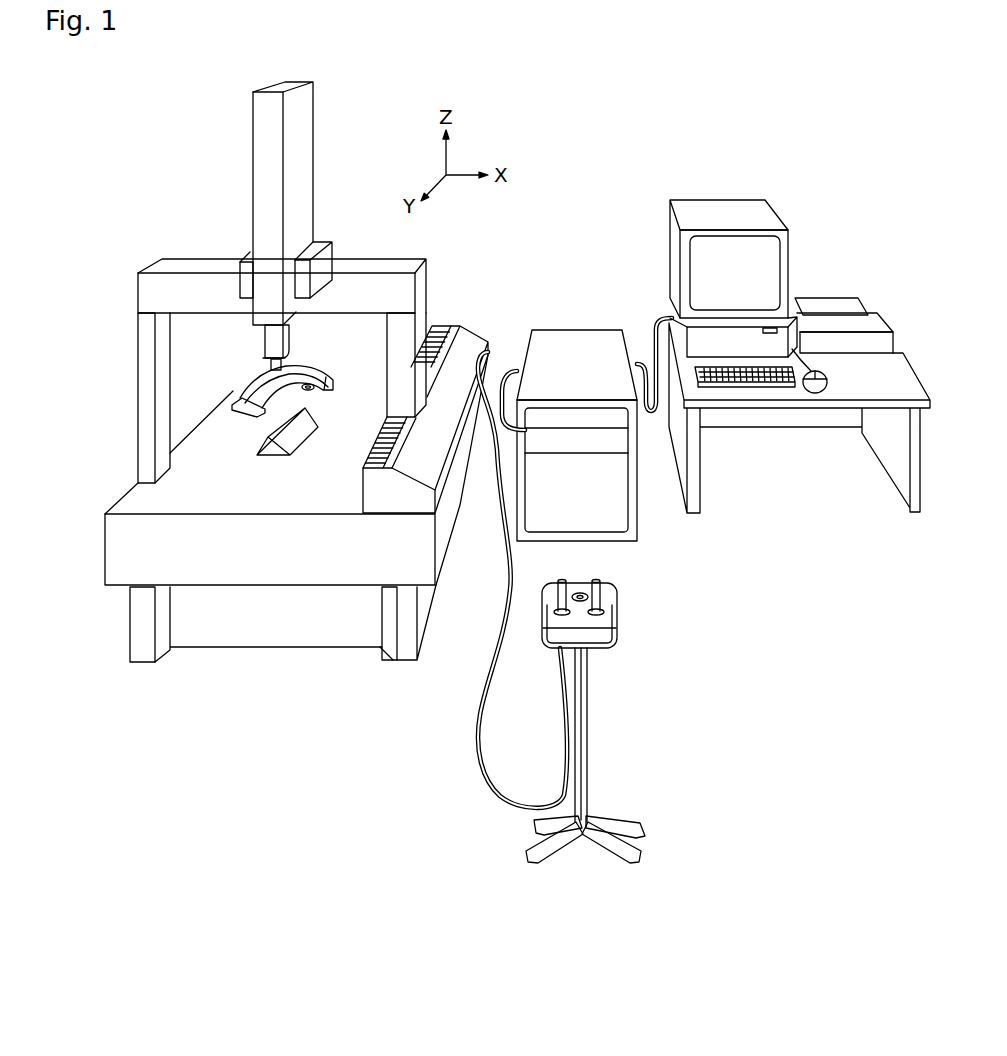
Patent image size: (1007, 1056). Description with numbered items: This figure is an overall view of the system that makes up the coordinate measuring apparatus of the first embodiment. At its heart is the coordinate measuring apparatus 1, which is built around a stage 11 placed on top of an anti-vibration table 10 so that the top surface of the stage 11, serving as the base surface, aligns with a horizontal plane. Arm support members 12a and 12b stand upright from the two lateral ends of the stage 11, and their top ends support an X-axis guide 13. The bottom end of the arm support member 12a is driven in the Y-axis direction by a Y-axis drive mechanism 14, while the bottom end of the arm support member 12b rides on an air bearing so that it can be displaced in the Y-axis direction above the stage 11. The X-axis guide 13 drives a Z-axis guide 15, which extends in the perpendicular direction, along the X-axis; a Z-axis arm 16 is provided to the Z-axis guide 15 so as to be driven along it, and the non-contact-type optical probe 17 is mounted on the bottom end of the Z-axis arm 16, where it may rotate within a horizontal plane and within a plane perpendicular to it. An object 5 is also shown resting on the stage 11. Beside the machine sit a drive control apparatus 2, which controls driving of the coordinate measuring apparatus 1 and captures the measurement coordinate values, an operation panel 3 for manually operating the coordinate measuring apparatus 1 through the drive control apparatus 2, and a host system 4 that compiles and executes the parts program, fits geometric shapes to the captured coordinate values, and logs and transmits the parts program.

The coordinate measuring apparatus 1 is at (289, 363).
The drive control apparatus 2 is at (576, 337).
The operation panel 3 is at (650, 629).
The host system 4 is at (820, 221).
The reference gauge 5 is at (296, 437).
The anti-vibration table 10 is at (138, 630).
The stage 11 is at (115, 550).
The arm support member 12a is at (425, 290).
The arm support member 12b is at (143, 392).
The X-axis guide 13 is at (190, 262).
The Y-axis drive mechanism 14 is at (468, 344).
The Z-axis guide 15 is at (262, 162).
The Z-axis arm 16 is at (289, 334).
The non-contact-type optical probe 17 is at (238, 388).